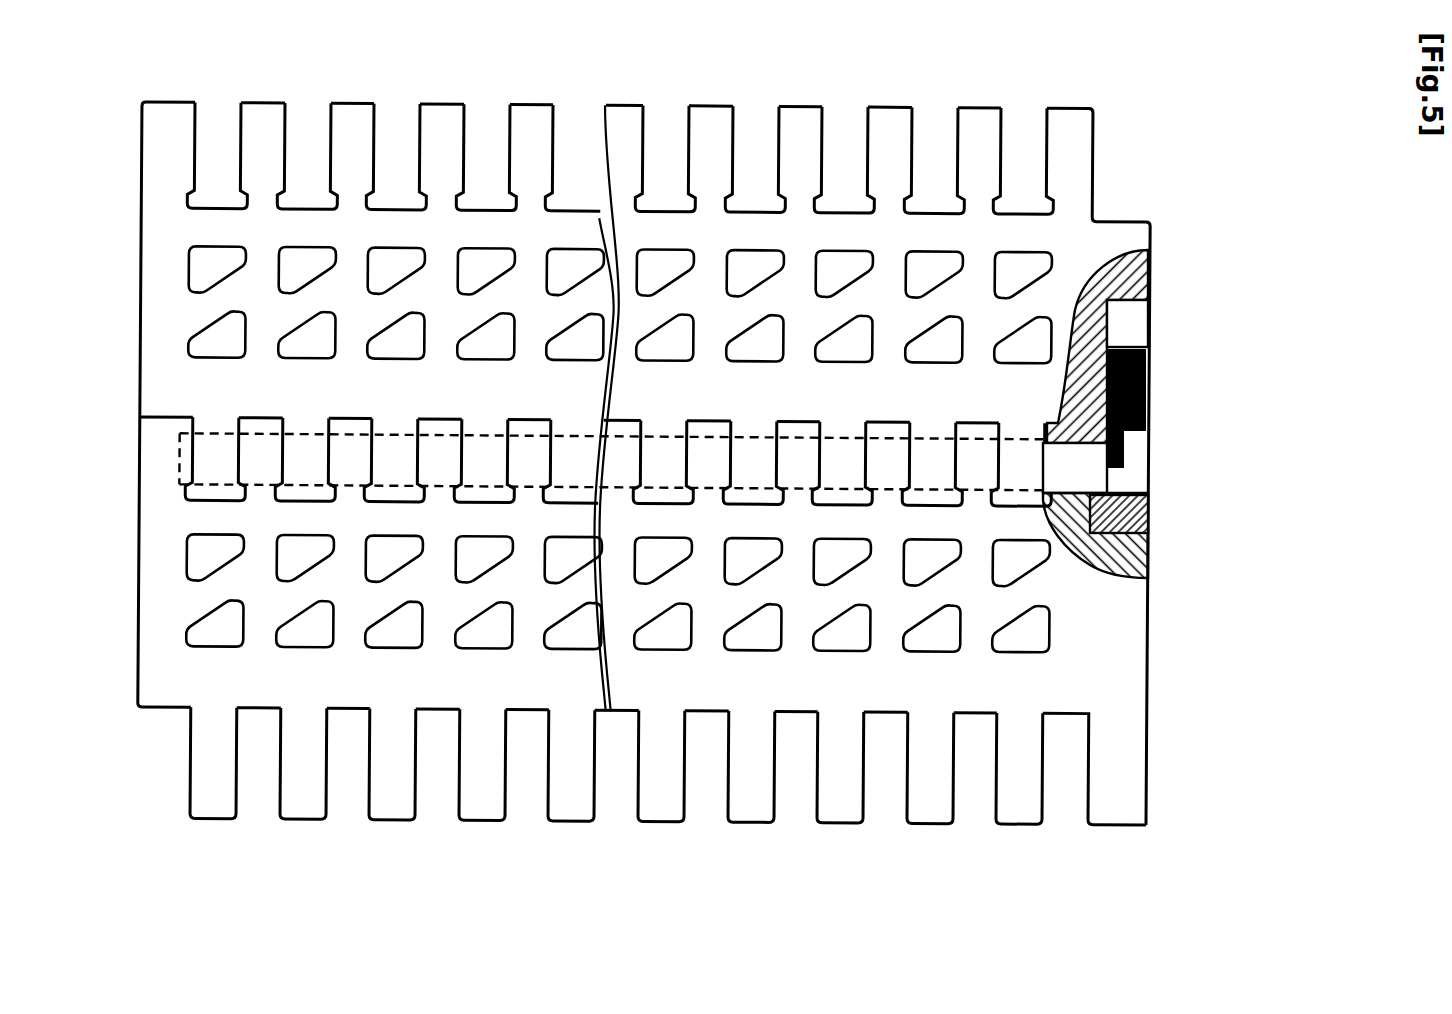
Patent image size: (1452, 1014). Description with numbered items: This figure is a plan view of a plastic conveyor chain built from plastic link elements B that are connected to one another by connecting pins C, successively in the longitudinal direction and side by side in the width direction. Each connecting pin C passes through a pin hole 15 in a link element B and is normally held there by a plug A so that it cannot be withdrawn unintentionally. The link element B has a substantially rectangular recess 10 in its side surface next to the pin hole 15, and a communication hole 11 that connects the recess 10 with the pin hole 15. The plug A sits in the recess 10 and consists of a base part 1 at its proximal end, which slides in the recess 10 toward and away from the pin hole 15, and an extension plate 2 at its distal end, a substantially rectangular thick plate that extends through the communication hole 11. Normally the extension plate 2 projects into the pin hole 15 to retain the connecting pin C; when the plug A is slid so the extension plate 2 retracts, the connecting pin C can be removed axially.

The link element B is at (1103, 222).
The connecting pin C is at (1070, 540).
The recess 10 is at (1123, 303).
The base part 1 is at (1150, 368).
The plug A is at (1140, 398).
The communication hole 11 is at (1107, 467).
The extension plate 2 is at (1147, 495).
The pin hole 15 is at (1147, 500).